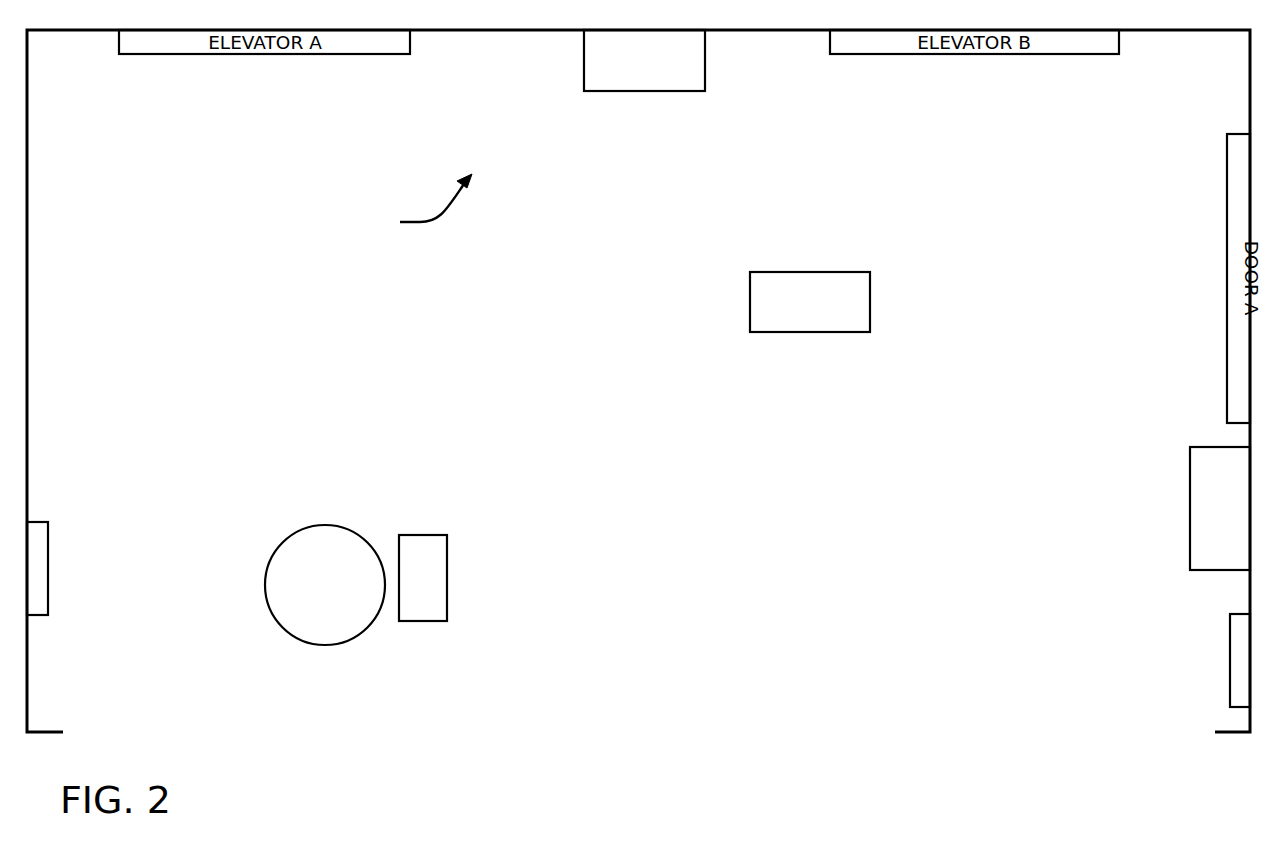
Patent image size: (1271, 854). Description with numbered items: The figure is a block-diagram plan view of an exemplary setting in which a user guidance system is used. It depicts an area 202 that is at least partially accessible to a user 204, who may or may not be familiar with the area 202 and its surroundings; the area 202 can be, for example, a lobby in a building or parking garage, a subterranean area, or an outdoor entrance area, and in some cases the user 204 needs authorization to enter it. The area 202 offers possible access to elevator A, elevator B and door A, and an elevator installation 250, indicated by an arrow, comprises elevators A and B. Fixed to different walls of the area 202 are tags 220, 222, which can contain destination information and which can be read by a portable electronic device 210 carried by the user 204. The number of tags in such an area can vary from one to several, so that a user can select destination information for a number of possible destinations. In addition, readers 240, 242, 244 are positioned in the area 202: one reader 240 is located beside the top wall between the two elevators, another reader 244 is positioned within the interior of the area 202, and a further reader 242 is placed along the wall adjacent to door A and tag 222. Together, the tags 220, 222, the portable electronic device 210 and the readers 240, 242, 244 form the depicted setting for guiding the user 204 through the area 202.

The area 202 is at (638, 381).
The user 204 is at (325, 585).
The portable electronic device 210 is at (447, 571).
The tag 220 is at (48, 563).
The tag 222 is at (1230, 653).
The reader 240 is at (688, 91).
The reader 242 is at (1190, 508).
The reader 244 is at (853, 332).
The elevator installation 250 is at (415, 202).